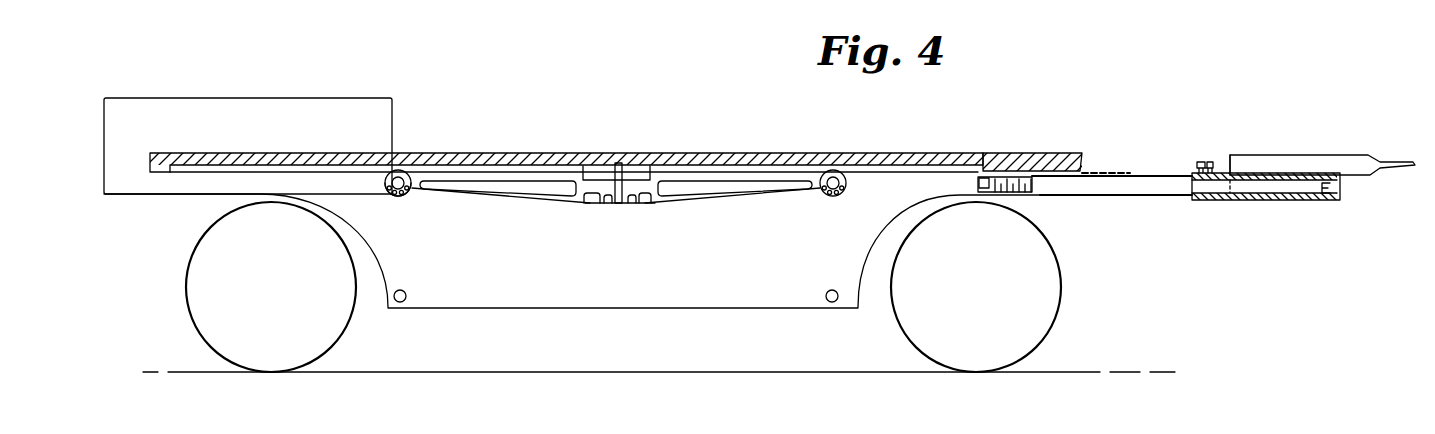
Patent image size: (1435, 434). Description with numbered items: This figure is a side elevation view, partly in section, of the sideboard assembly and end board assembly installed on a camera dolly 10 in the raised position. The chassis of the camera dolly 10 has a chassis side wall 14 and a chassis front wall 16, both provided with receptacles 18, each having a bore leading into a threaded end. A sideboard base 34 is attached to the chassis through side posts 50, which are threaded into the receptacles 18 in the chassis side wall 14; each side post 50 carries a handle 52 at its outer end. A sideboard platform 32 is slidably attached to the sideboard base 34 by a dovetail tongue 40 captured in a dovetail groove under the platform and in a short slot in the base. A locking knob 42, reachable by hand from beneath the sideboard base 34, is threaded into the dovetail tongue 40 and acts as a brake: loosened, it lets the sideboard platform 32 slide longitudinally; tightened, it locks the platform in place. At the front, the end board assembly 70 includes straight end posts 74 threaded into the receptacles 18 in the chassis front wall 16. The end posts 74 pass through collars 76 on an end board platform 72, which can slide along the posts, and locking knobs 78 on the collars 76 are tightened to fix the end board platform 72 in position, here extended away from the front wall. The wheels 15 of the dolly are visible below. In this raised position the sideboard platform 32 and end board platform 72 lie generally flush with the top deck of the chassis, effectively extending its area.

The camera dolly 10 is at (647, 104).
The chassis side wall 14 is at (658, 284).
The wheels 15 is at (282, 304).
The chassis front wall 16 is at (1058, 153).
The receptacles 18 is at (1023, 188).
The sideboard platform 32 is at (790, 153).
The sideboard base 34 is at (652, 203).
The dovetail tongue 40 is at (640, 153).
The locking knob 42 is at (600, 203).
The side posts 50 is at (414, 196).
The handle 52 is at (1334, 200).
The end board assembly 70 is at (1270, 137).
The end board platform 72 is at (1335, 160).
The end posts 74 is at (1152, 188).
The collars 76 is at (1278, 200).
The locking knobs 78 is at (1212, 162).